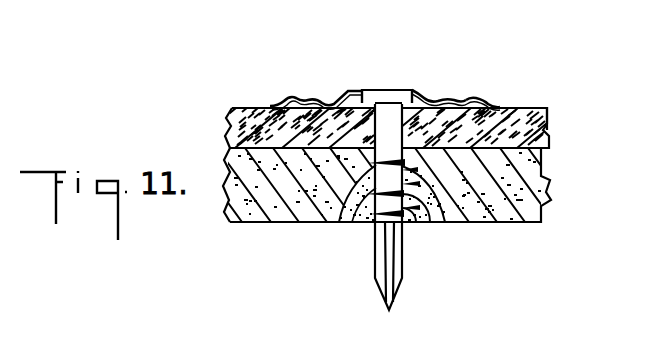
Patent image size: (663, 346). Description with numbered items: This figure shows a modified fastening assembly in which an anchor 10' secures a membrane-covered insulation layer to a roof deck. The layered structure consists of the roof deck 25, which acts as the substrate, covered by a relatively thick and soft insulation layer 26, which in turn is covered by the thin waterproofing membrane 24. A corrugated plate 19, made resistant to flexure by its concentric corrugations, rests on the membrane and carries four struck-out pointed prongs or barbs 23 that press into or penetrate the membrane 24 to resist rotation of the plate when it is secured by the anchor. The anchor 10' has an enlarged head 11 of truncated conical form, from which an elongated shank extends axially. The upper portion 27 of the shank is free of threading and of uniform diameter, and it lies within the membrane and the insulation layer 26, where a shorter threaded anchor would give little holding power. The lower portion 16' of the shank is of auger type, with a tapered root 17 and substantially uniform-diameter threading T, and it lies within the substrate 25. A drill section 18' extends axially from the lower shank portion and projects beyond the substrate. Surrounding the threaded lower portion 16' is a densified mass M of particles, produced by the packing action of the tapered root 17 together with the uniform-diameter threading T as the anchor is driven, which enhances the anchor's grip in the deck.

The anchor 10' is at (402, 132).
The enlarged head 11 is at (376, 90).
The lower portion of shank section 16' is at (401, 211).
The root 17 is at (464, 207).
The drill section 18' is at (417, 266).
The plate 19 is at (300, 97).
The pointed prongs or barbs 23 is at (462, 95).
The waterproofing membrane 24 is at (245, 107).
The roof deck 25 is at (527, 220).
The insulation layer 26 is at (548, 116).
The upper portion of shank section 27 is at (443, 97).
The densified mass of particles M is at (339, 223).
The threading T is at (363, 223).